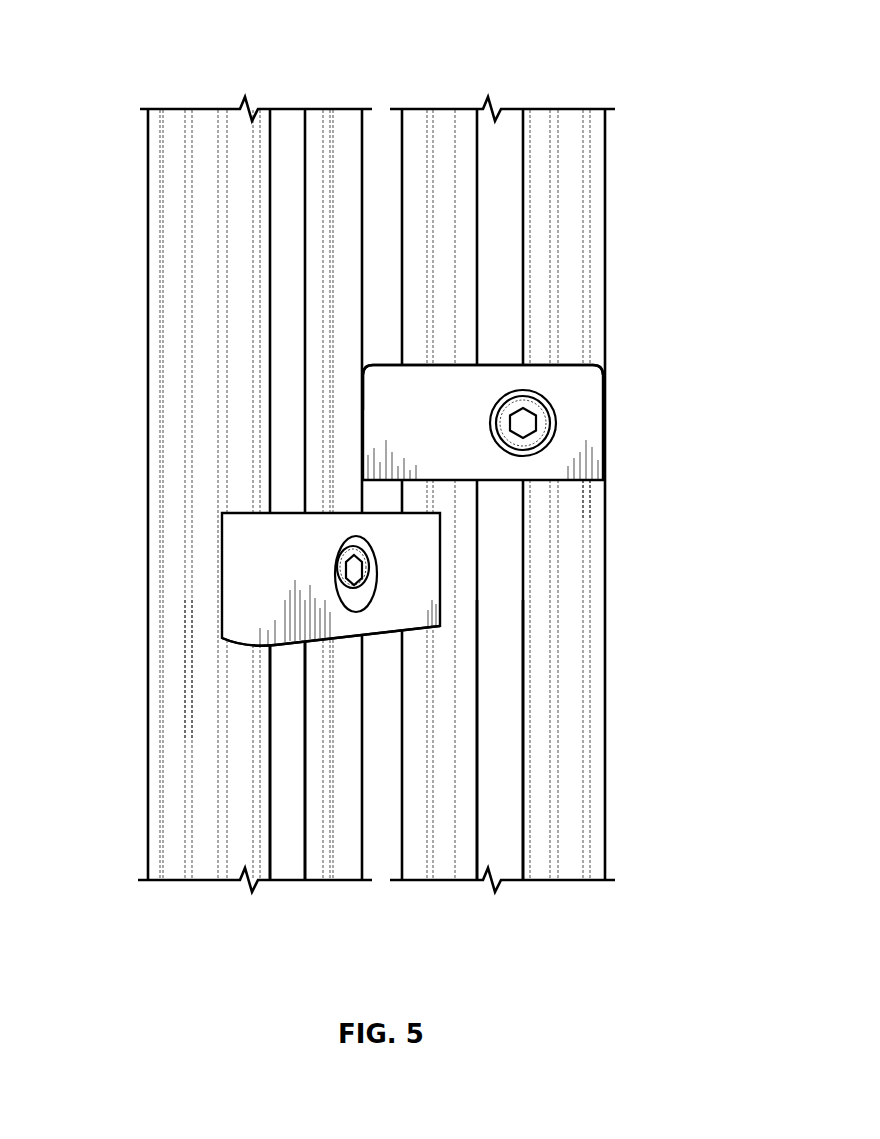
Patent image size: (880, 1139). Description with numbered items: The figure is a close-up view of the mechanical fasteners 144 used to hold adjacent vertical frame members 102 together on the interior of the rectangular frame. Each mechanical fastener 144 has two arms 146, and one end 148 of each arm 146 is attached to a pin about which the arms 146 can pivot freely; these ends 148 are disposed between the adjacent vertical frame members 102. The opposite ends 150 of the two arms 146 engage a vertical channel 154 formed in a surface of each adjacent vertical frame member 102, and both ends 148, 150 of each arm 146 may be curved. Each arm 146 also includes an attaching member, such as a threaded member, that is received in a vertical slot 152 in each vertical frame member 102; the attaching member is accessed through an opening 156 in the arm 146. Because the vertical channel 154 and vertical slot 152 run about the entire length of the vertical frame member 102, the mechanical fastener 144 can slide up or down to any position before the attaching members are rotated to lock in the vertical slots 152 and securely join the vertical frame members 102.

The vertical frame member 102 is at (331, 93).
The mechanical fastener 144 is at (580, 387).
The arm 146 is at (470, 424).
The end 148 is at (410, 630).
The opposite end 150 is at (572, 365).
The vertical slot 152 is at (290, 878).
The vertical channel 154 is at (587, 503).
The opening 156 is at (552, 419).